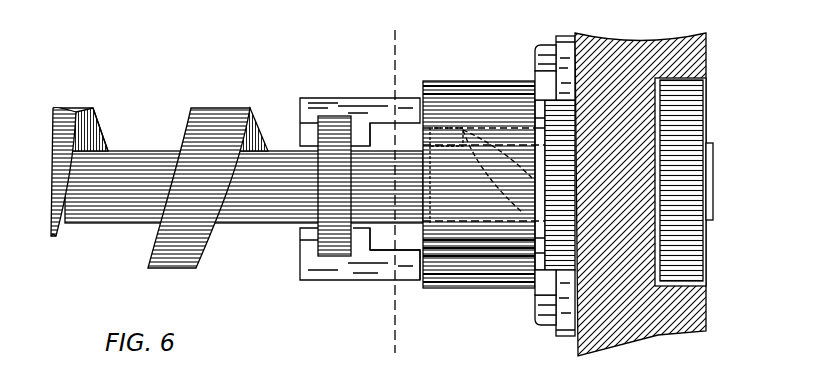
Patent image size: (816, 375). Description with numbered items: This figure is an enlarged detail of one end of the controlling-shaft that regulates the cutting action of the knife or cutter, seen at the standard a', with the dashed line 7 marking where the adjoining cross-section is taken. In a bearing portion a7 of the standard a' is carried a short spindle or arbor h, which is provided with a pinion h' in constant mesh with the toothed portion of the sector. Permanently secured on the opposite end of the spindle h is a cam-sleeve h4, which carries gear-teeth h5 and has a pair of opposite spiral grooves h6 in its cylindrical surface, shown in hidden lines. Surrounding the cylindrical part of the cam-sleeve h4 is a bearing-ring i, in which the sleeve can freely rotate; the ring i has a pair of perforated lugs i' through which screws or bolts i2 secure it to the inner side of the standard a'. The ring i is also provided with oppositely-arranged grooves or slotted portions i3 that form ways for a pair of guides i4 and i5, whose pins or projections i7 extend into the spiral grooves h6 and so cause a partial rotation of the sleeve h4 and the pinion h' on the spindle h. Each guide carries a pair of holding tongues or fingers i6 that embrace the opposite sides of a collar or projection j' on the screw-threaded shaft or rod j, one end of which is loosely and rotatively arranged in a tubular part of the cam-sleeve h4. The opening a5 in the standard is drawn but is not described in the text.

The screw-threaded shaft or rod j is at (228, 196).
The collar or projection j' is at (331, 217).
The bearing-ring i is at (479, 171).
The perforated lugs i' is at (565, 190).
The screws or bolts i2 is at (535, 38).
The grooves or slotted portions i3 is at (408, 246).
The guide i4 is at (363, 96).
The guide i5 is at (374, 268).
The holding tongues or fingers i6 is at (298, 128).
The pins or projections i7 is at (443, 129).
The spindle or arbor h is at (700, 180).
The pinion h' is at (721, 201).
The cam-sleeve h4 is at (528, 283).
The gear-teeth h5 is at (546, 105).
The spiral grooves h6 is at (505, 170).
The standard a' is at (659, 194).
The bearing opening a5 is at (700, 270).
The bearing portion a7 is at (616, 213).
The section line 7 is at (409, 198).